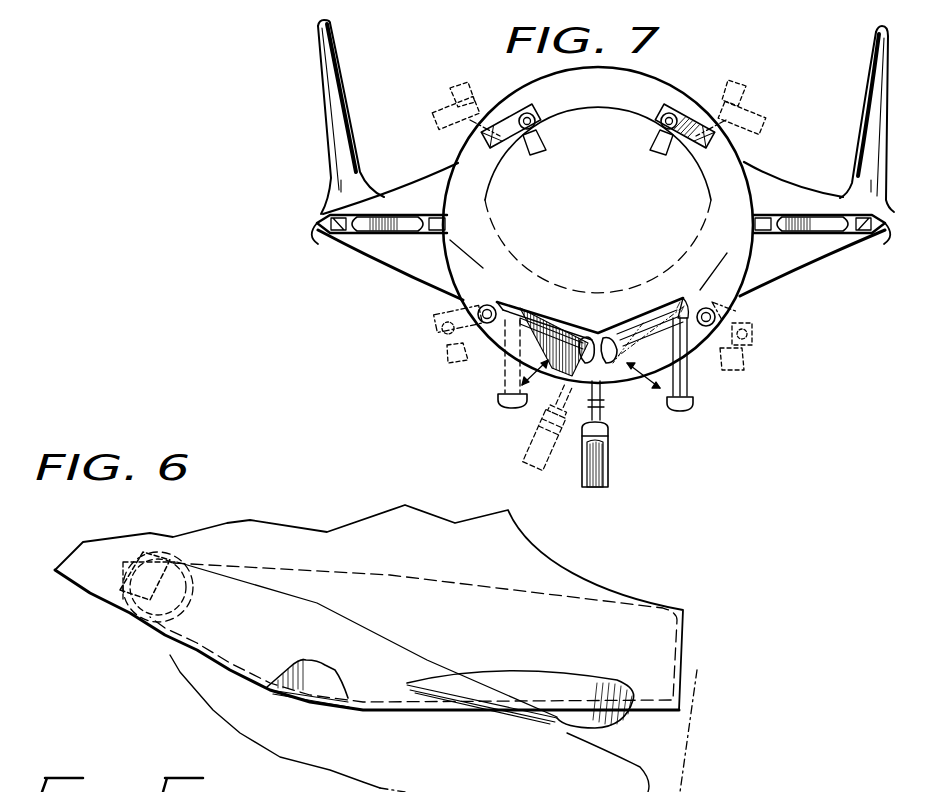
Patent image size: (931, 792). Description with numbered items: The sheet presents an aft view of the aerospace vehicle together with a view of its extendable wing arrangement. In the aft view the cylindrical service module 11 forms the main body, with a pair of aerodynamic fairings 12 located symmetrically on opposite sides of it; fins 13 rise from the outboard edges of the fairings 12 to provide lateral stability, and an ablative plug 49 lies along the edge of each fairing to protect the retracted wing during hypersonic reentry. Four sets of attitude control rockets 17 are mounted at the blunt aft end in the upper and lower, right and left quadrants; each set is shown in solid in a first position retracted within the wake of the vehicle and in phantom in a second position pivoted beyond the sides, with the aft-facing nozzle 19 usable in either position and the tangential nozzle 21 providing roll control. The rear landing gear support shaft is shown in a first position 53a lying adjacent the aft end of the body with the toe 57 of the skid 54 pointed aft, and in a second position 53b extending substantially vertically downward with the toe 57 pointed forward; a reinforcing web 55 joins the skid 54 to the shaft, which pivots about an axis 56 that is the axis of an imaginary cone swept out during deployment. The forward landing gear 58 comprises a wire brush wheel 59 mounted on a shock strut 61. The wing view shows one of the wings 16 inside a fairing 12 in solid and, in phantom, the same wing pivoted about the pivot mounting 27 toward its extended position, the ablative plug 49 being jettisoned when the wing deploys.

In FIG. 7, the service module 11 is at (745, 298).
In FIG. 7, the aerodynamic fairings 12 is at (427, 182).
In FIG. 6, the aerodynamic fairings 12 is at (390, 690).
In FIG. 7, the fins 13 is at (345, 85).
In FIG. 6, the fins 13 is at (540, 662).
In FIG. 6, the wings 16 is at (287, 703).
In FIG. 7, the attitude control rockets 17 is at (505, 115).
In FIG. 7, the second nozzle 19 is at (536, 116).
In FIG. 7, the third nozzle 21 is at (445, 102).
In FIG. 6, the pivot mounting 27 is at (135, 615).
In FIG. 7, the ablative plug 49 is at (316, 223).
In FIG. 6, the ablative plug 49 is at (340, 710).
In FIG. 7, the first position of support shaft 53a is at (545, 315).
In FIG. 7, the second position of support shaft 53b is at (698, 396).
In FIG. 7, the skid 54 is at (495, 403).
In FIG. 7, the reinforcing web 55 is at (575, 330).
In FIG. 7, the axis 56 is at (490, 262).
In FIG. 7, the toe 57 is at (612, 318).
In FIG. 7, the forward landing gear 58 is at (568, 458).
In FIG. 7, the wire brush wheel 59 is at (530, 460).
In FIG. 7, the shock strut 61 is at (604, 402).